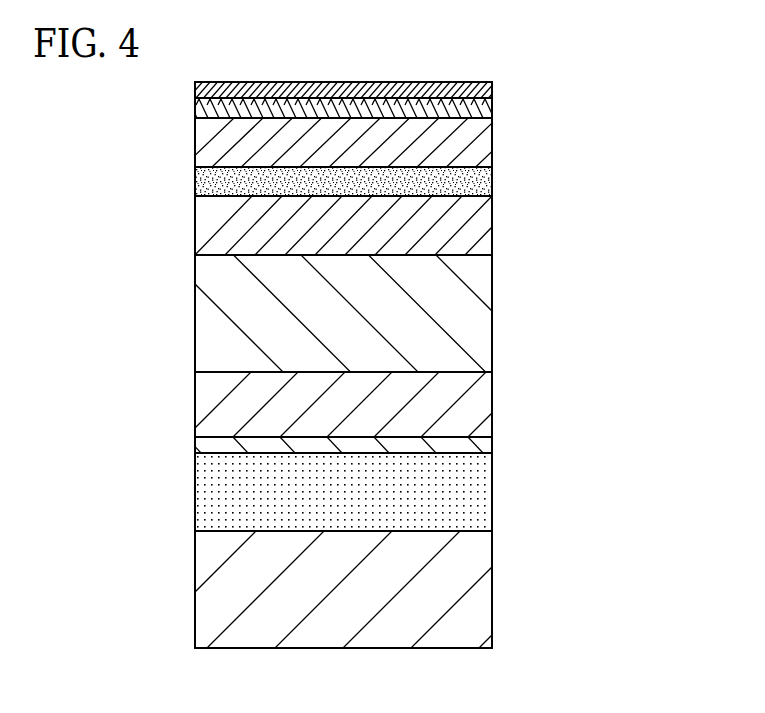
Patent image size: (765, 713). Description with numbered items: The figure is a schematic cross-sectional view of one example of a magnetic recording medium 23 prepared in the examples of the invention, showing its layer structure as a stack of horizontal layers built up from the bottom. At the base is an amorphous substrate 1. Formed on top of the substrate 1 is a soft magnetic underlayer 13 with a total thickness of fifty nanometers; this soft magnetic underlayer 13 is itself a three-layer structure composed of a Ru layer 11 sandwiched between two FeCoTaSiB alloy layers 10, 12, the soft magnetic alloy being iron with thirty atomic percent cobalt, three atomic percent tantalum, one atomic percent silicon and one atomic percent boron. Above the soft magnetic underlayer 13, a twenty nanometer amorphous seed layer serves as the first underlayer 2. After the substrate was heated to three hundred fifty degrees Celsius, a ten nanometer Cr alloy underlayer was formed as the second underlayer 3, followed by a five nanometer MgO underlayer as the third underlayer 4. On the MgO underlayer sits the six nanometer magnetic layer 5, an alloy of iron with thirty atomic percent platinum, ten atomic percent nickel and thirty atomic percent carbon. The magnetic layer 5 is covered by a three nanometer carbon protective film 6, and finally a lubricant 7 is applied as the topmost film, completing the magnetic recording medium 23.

The substrate 1 is at (483, 597).
The FeCoTaSiB alloy layer 10 is at (371, 492).
The Ru layer 11 is at (483, 445).
The FeCoTaSiB alloy layer 12 is at (483, 407).
The soft magnetic underlayer 13 is at (391, 451).
The first underlayer 2 is at (483, 317).
The second underlayer 3 is at (483, 225).
The third underlayer 4 is at (483, 183).
The magnetic layer 5 is at (483, 142).
The carbon protective film 6 is at (485, 113).
The lubricant 7 is at (487, 93).
The magnetic recording medium 23 is at (600, 131).